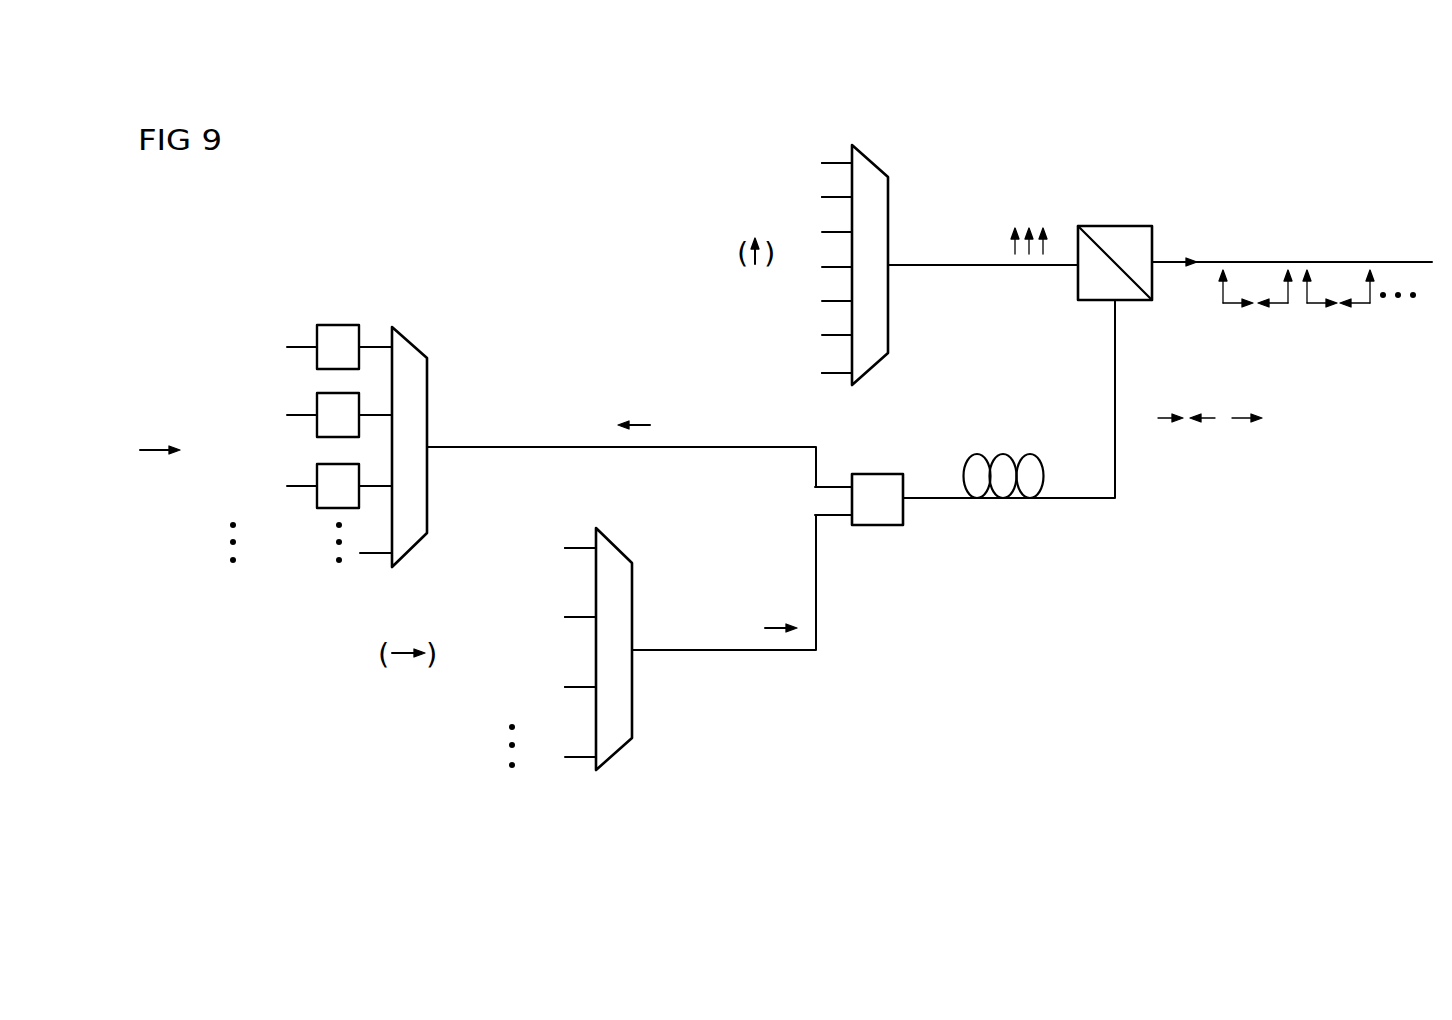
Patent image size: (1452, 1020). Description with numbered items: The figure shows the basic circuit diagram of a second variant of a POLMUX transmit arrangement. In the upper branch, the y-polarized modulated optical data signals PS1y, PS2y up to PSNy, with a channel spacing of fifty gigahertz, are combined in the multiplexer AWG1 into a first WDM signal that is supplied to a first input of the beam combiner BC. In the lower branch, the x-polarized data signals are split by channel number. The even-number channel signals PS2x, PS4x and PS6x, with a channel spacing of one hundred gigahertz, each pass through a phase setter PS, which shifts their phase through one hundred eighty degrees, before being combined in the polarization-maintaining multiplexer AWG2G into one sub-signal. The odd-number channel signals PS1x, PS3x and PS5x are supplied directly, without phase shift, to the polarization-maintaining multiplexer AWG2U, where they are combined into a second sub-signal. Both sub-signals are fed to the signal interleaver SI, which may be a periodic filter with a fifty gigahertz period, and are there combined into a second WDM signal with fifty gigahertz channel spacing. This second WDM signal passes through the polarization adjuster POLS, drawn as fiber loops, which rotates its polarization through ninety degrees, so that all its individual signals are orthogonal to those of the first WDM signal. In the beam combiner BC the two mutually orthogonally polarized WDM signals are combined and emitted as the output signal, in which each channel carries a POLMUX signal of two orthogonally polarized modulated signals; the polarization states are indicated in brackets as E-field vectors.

The multiplexer AWG1 is at (866, 158).
The polarization-maintaining multiplexer AWG2G is at (403, 336).
The polarization-maintaining multiplexer AWG2U is at (614, 752).
The beam combiner BC is at (1109, 226).
The signal interleaver SI is at (878, 474).
The polarization adjuster POLS is at (1005, 454).
The phase setter PS is at (338, 416).
The modulated optical data signal PS1y is at (782, 164).
The modulated optical data signal PS2y is at (782, 197).
The modulated optical data signal PSNy is at (782, 372).
The modulated optical data signal PS1x is at (524, 549).
The modulated optical data signal PS3x is at (524, 619).
The modulated optical data signal PS5x is at (524, 689).
The modulated optical data signal PS2x is at (246, 349).
The modulated optical data signal PS4x is at (246, 419).
The modulated optical data signal PS6x is at (246, 489).